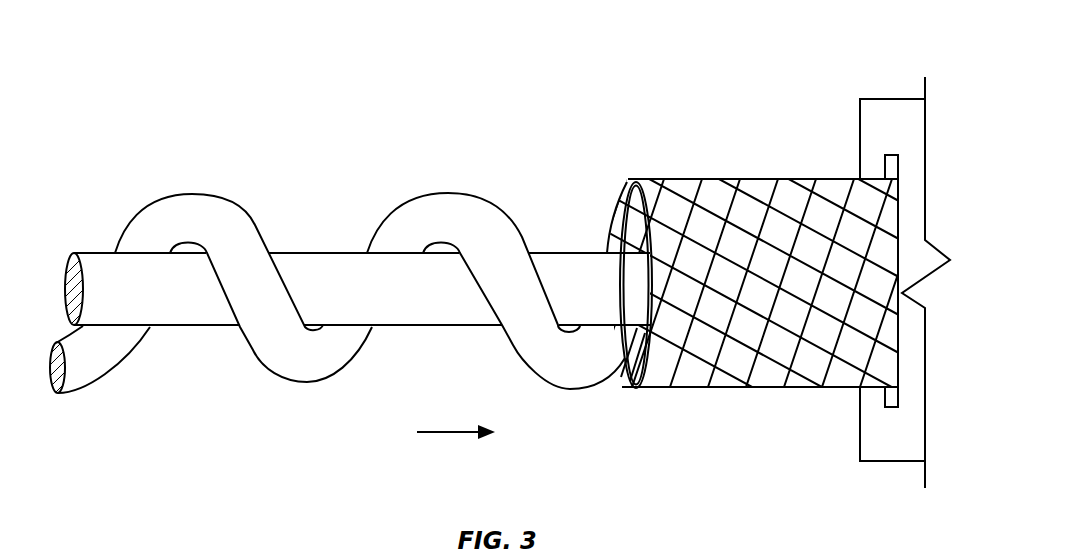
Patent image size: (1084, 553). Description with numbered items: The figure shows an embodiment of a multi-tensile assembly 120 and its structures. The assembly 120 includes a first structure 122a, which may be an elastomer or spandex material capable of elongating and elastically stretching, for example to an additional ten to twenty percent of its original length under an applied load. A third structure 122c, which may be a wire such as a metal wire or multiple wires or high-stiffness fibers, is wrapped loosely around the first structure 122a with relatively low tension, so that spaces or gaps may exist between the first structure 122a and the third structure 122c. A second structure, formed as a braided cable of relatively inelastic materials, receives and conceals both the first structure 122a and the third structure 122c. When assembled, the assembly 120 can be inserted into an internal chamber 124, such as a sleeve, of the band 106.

The assembly 120 is at (76, 110).
The first structure 122a is at (312, 253).
The third structure 122c is at (392, 209).
The internal chamber 124 is at (885, 397).
The band 106 is at (872, 99).